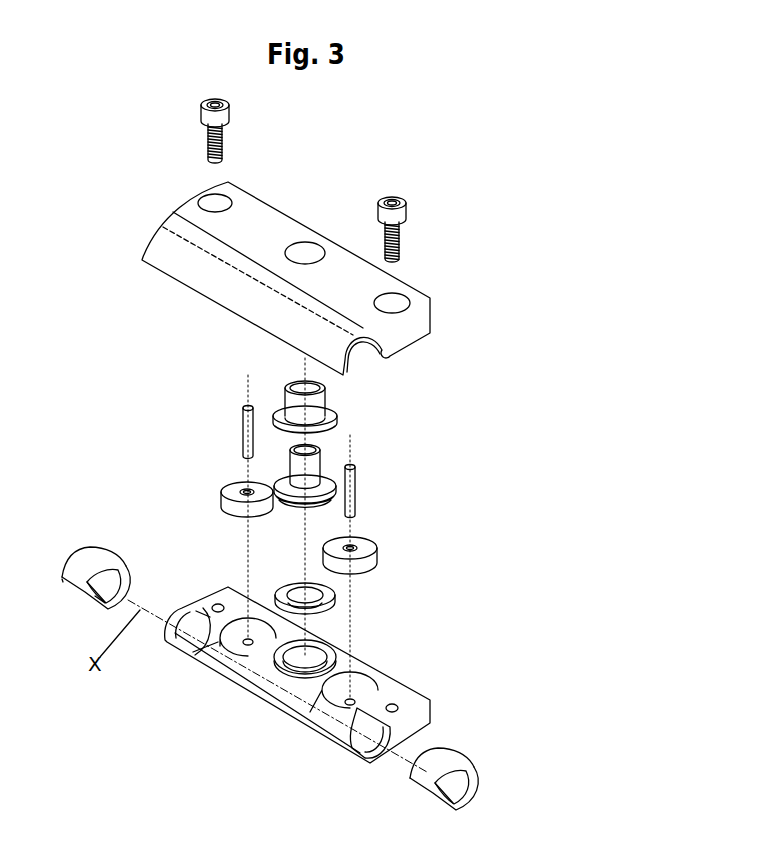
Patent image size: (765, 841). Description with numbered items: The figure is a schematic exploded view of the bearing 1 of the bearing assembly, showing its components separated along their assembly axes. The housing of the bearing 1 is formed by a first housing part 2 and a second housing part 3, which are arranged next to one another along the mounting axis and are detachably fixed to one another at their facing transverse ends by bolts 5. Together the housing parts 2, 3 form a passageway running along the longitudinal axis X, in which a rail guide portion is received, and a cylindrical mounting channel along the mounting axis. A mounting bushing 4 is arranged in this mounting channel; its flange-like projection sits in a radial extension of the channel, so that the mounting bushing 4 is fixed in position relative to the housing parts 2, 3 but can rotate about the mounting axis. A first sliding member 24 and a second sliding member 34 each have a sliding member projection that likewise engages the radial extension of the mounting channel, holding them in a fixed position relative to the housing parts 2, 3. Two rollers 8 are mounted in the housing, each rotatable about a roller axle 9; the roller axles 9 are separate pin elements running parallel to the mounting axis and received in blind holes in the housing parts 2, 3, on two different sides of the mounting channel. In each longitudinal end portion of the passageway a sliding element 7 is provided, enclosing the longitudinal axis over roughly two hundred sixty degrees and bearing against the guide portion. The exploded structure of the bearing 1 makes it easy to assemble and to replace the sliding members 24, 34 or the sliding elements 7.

The bearing 1 is at (563, 225).
The first housing part 2 is at (165, 247).
The second housing part 3 is at (250, 697).
The mounting bushing 4 is at (320, 447).
The bolts 5 is at (205, 98).
The sliding element 7 is at (80, 562).
The rollers 8 is at (223, 485).
The roller axle 9 is at (245, 406).
The first sliding member 24 is at (327, 390).
The second sliding member 34 is at (322, 600).